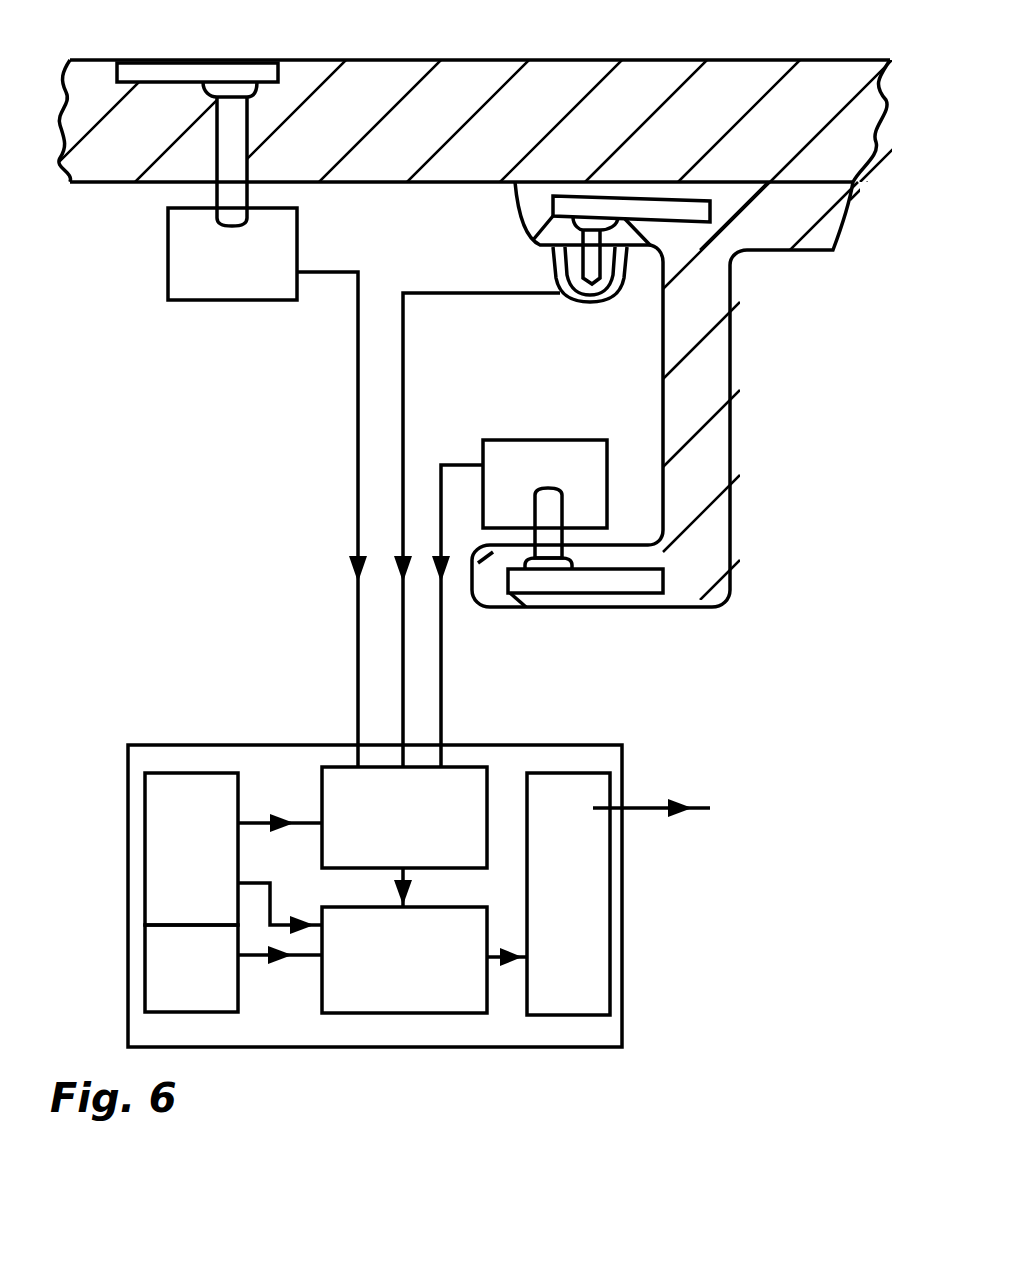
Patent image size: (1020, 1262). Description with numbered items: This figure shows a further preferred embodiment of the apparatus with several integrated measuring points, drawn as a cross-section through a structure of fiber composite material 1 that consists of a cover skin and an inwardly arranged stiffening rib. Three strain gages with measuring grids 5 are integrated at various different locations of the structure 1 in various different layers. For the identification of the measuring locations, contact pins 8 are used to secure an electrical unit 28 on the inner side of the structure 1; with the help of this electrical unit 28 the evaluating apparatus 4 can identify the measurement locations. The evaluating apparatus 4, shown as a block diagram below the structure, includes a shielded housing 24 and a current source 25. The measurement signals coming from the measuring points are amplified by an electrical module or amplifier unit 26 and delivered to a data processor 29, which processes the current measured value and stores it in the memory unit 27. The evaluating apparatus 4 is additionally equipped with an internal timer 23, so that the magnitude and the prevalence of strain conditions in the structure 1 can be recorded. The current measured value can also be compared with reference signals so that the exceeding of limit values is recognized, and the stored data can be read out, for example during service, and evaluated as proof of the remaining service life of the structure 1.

The structure of fiber composite material 1 is at (662, 80).
The measuring grid 5 is at (198, 73).
The contact pin 8 is at (227, 147).
The electrical unit 28 is at (387, 368).
The evaluating apparatus 4 is at (413, 855).
The shielded housing 24 is at (622, 1030).
The current source 25 is at (191, 849).
The internal timer 23 is at (191, 968).
The amplifier unit 26 is at (404, 817).
The data processor 29 is at (404, 960).
The memory unit 27 is at (568, 894).